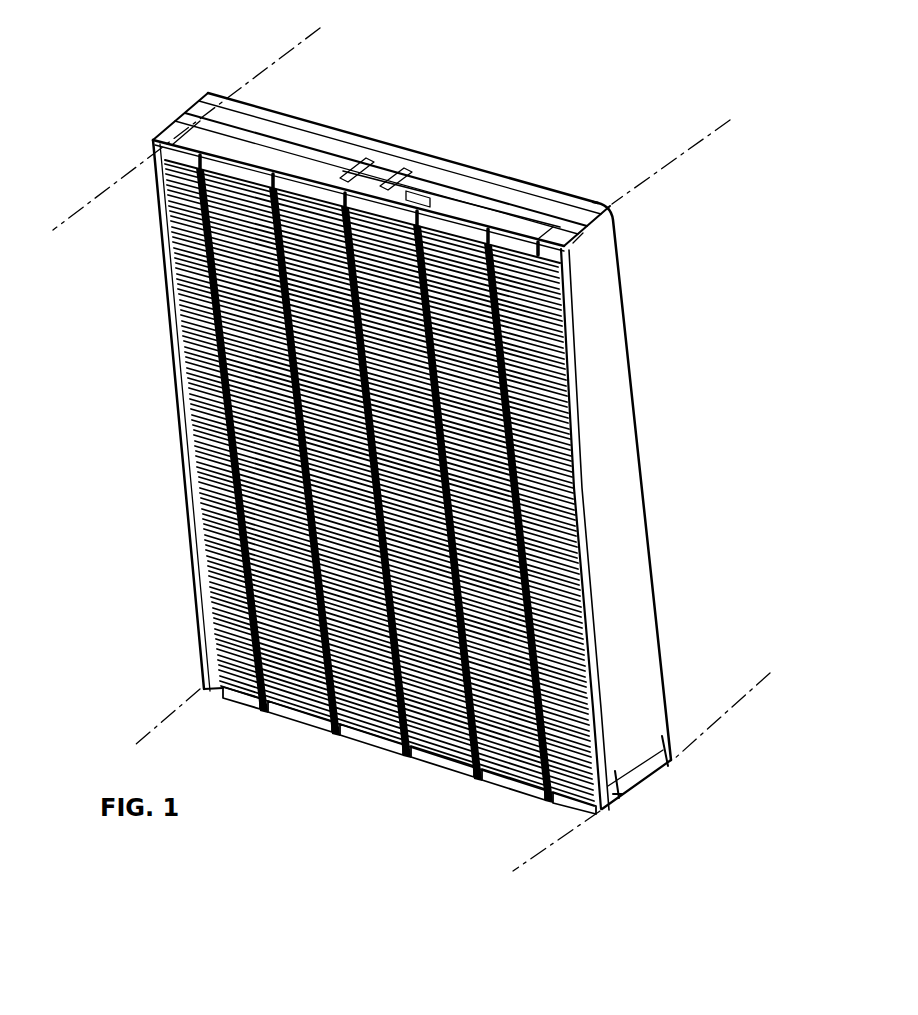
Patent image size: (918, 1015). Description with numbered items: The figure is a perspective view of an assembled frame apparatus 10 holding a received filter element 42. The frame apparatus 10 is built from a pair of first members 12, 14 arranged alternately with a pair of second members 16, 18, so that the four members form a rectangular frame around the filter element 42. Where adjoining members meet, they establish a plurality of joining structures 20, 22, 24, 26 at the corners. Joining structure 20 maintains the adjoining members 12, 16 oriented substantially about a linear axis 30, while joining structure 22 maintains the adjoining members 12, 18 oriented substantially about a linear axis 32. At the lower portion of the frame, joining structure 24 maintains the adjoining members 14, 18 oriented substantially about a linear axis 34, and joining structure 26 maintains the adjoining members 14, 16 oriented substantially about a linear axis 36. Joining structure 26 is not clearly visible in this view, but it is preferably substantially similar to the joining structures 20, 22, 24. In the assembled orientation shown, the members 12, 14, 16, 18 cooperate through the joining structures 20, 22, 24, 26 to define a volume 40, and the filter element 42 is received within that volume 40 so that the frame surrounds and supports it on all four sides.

The frame apparatus 10 is at (800, 365).
The first member 12 is at (470, 157).
The first member 14 is at (424, 756).
The second member 16 is at (181, 432).
The second member 18 is at (610, 392).
The joining structure 20 is at (180, 97).
The joining structure 22 is at (572, 236).
The joining structure 24 is at (637, 771).
The joining structure 26 is at (193, 663).
The linear axis 30 is at (318, 22).
The linear axis 32 is at (726, 114).
The linear axis 34 is at (763, 662).
The linear axis 36 is at (150, 714).
The volume 40 is at (326, 738).
The filter element 42 is at (512, 740).